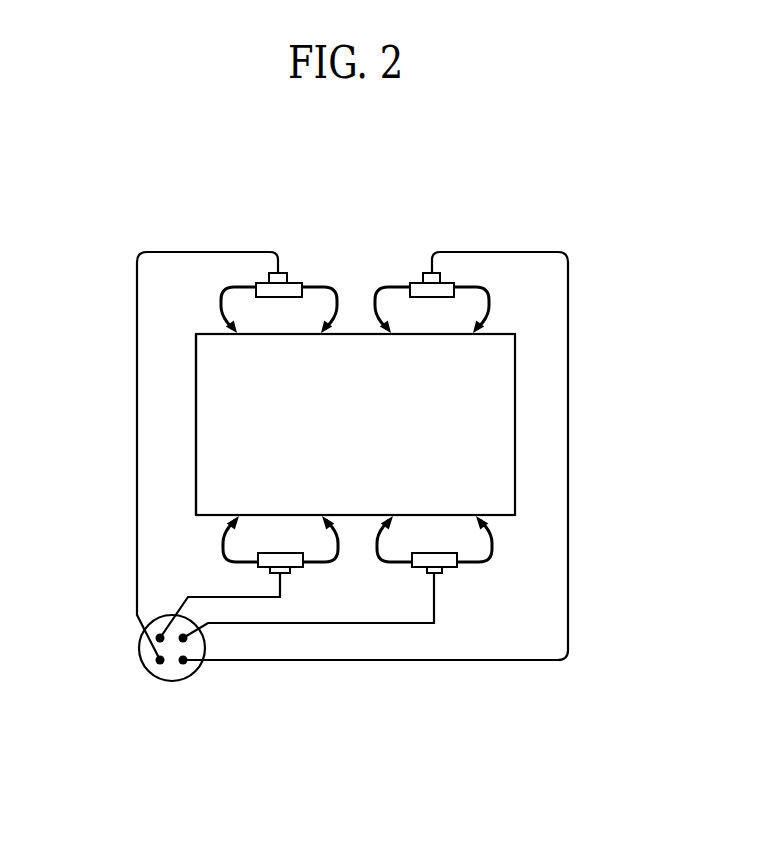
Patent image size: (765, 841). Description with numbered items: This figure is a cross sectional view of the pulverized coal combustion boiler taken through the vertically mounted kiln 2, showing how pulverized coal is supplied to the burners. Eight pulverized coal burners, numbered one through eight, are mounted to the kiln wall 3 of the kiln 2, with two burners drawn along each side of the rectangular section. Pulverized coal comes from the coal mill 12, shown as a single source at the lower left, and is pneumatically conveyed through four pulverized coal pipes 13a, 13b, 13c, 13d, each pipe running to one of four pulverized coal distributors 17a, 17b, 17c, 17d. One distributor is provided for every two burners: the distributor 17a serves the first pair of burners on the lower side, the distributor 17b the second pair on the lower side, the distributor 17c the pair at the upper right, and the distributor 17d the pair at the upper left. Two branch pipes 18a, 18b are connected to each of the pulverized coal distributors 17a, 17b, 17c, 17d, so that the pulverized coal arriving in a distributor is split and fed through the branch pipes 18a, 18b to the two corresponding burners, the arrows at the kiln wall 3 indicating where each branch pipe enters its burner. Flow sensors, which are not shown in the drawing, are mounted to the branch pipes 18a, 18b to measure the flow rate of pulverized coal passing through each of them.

The kiln 2 is at (370, 437).
The kiln wall 3 is at (196, 407).
The coal mill 12 is at (172, 682).
The pulverized coal pipe 13a is at (282, 597).
The pulverized coal pipe 13b is at (434, 622).
The pulverized coal pipe 13c is at (568, 443).
The pulverized coal pipe 13d is at (137, 418).
The pulverized coal distributor 17a is at (262, 568).
The pulverized coal distributor 17b is at (446, 565).
The pulverized coal distributor 17c is at (430, 273).
The pulverized coal distributor 17d is at (293, 282).
The branch pipe 18a is at (337, 300).
The branch pipe 18b is at (221, 303).